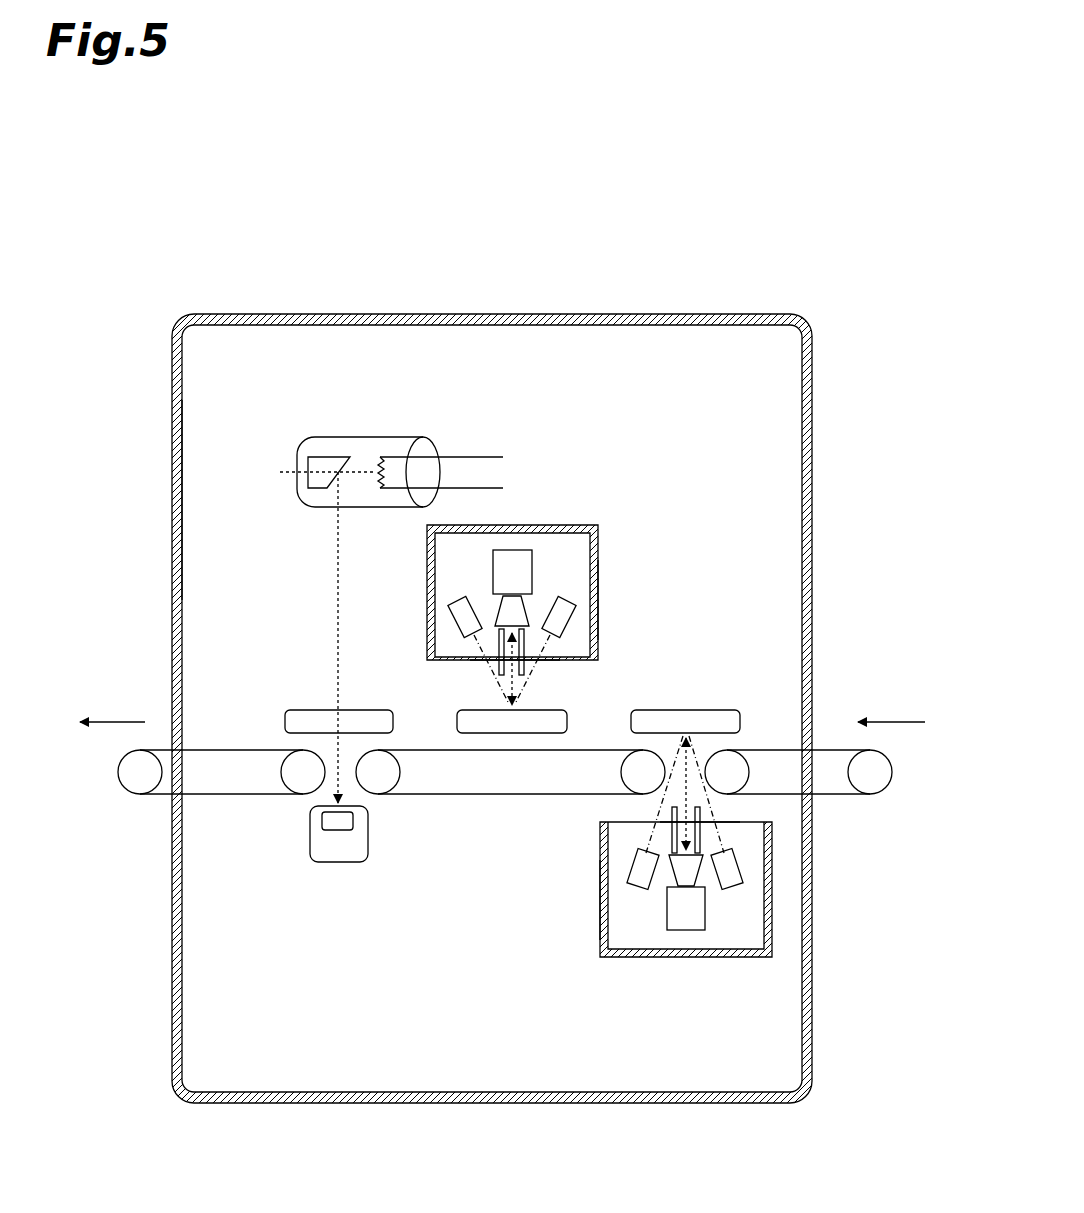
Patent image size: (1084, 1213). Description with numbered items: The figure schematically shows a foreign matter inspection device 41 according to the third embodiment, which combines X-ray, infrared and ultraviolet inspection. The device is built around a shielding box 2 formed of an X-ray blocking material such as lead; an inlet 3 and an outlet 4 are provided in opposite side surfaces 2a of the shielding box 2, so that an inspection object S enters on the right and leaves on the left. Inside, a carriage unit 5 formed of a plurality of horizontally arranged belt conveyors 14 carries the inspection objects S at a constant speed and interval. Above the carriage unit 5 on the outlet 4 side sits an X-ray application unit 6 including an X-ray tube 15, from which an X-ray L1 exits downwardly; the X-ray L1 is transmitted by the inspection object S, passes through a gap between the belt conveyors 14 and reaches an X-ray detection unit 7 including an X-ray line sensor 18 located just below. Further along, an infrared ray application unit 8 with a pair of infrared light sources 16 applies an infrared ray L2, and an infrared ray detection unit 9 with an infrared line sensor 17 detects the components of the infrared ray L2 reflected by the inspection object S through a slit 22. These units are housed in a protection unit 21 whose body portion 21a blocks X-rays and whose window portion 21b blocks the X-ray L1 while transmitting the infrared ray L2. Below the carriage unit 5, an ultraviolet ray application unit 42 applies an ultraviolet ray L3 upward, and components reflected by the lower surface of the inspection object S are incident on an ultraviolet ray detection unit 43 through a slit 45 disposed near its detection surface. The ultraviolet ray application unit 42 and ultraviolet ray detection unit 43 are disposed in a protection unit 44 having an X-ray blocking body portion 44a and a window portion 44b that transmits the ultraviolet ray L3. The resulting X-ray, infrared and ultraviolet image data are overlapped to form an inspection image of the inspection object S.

The foreign matter inspection device 41 is at (197, 243).
The shielding box 2 is at (480, 313).
The side surface 2a is at (172, 490).
The inlet 3 is at (812, 712).
The outlet 4 is at (172, 712).
The carriage unit 5 is at (110, 784).
The X-ray application unit 6 is at (295, 437).
The X-ray detection unit 7 is at (318, 870).
The infrared ray application unit 8 is at (452, 598).
The infrared ray detection unit 9 is at (540, 553).
The belt conveyor 14 is at (228, 750).
The X-ray tube 15 is at (372, 437).
The infrared light source 16 is at (462, 624).
The infrared line sensor 17 is at (514, 557).
The X-ray line sensor 18 is at (322, 819).
The protection unit 21 is at (608, 538).
The body portion 21a is at (598, 600).
The window portion 21b is at (570, 660).
The slit 22 is at (482, 618).
The ultraviolet ray application unit 42 is at (636, 897).
The ultraviolet ray detection unit 43 is at (652, 933).
The protection unit 44 is at (784, 942).
The body portion 44a is at (604, 935).
The window portion 44b is at (738, 838).
The slit 45 is at (703, 858).
The inspection object S is at (330, 710).
The X-ray L1 is at (338, 582).
The infrared ray L2 is at (522, 680).
The ultraviolet ray L3 is at (665, 786).